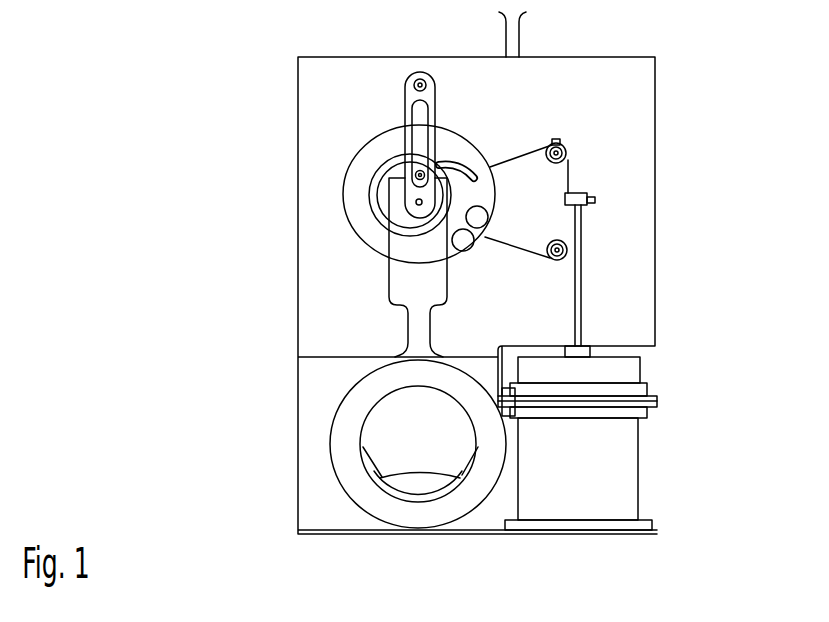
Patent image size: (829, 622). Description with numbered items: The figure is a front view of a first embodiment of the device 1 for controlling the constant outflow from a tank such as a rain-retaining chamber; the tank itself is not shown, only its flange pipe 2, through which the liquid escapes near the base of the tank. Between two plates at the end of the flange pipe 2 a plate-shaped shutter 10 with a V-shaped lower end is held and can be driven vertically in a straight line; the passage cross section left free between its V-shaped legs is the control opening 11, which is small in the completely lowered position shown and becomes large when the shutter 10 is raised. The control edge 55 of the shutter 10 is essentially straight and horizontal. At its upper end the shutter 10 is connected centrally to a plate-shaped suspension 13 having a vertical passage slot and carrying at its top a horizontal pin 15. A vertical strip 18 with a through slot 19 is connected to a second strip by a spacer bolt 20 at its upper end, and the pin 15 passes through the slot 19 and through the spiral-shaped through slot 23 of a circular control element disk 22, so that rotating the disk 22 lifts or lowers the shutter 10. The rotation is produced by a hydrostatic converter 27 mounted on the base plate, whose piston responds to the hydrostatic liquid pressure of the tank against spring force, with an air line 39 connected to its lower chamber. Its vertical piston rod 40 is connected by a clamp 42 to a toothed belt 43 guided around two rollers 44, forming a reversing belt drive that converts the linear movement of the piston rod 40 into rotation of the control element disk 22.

The device 1 is at (718, 62).
The flange pipe 2 is at (353, 478).
The shutter 10 is at (402, 437).
The control opening 11 is at (420, 490).
The suspension 13 is at (392, 285).
The pin 15 is at (414, 175).
The strip 18 is at (407, 97).
The through slot 19 is at (418, 115).
The spacer bolt 20 is at (418, 78).
The control element disk 22 is at (353, 210).
The spiral-shaped through slot 23 is at (373, 192).
The hydrostatic converter 27 is at (620, 462).
The line 39 is at (512, 33).
The piston rod 40 is at (578, 317).
The clamp 42 is at (580, 190).
The belt 43 is at (515, 156).
The rollers 44 is at (557, 140).
The control edge 55 is at (378, 492).